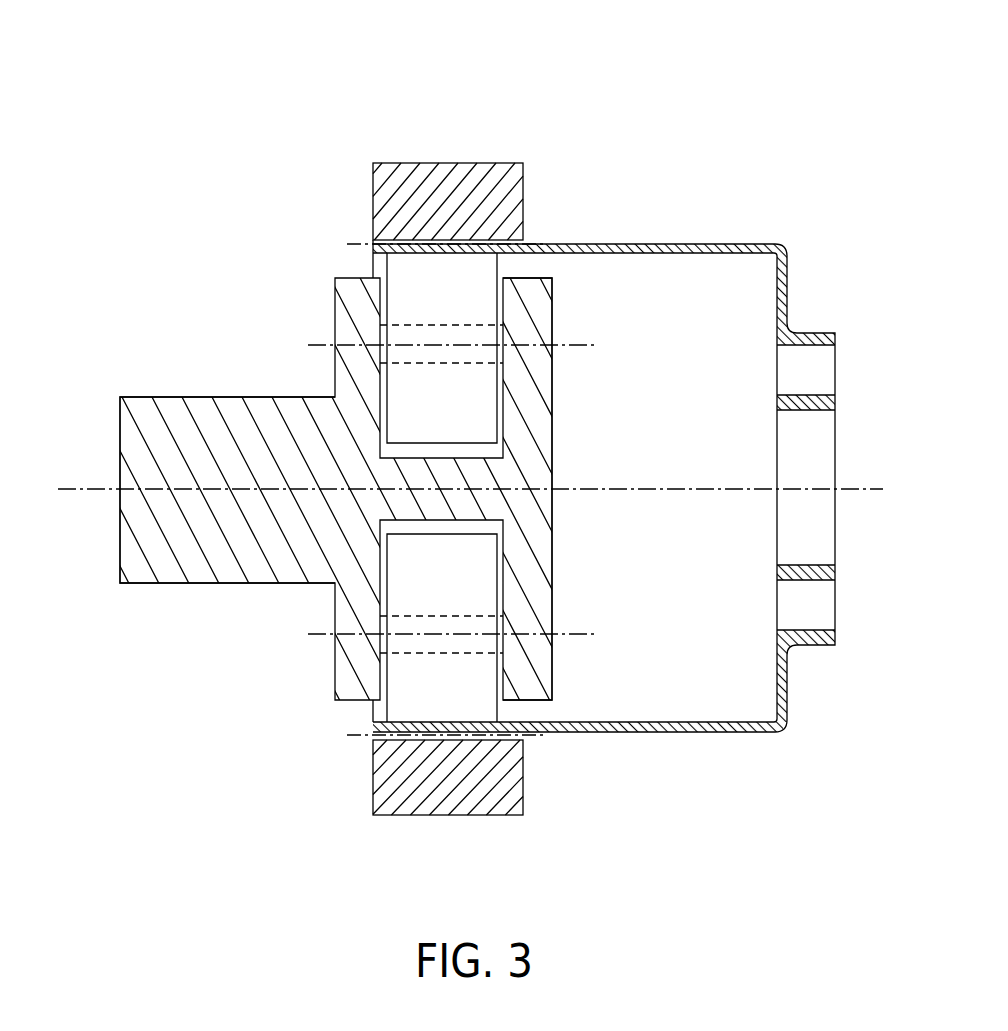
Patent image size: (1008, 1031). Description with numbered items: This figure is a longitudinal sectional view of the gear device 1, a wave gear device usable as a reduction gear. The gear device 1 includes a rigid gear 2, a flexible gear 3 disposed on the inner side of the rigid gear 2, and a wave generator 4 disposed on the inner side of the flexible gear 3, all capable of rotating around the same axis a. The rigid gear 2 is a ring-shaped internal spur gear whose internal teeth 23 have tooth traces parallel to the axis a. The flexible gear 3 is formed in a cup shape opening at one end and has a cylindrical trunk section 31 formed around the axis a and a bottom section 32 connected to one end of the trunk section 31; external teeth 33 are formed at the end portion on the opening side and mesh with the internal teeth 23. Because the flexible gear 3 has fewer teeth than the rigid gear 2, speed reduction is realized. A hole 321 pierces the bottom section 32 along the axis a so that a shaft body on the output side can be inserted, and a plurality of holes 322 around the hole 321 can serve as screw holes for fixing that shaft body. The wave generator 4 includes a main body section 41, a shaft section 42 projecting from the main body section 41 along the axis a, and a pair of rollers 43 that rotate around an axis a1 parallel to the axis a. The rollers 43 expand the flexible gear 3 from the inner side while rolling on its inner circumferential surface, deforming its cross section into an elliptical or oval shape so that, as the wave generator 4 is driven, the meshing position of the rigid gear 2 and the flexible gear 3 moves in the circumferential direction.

The gear device 1 is at (672, 90).
The rigid gear 2 is at (478, 160).
The internal teeth 23 is at (512, 250).
The flexible gear 3 is at (597, 486).
The trunk section 31 is at (640, 733).
The bottom section 32 is at (835, 487).
The hole 321 is at (802, 410).
The holes 322 is at (802, 347).
The external teeth 33 is at (400, 236).
The wave generator 4 is at (395, 487).
The main body section 41 is at (552, 447).
The shaft section 42 is at (207, 585).
The rollers 43 is at (497, 407).
The axis a is at (76, 492).
The axis a1 is at (598, 344).